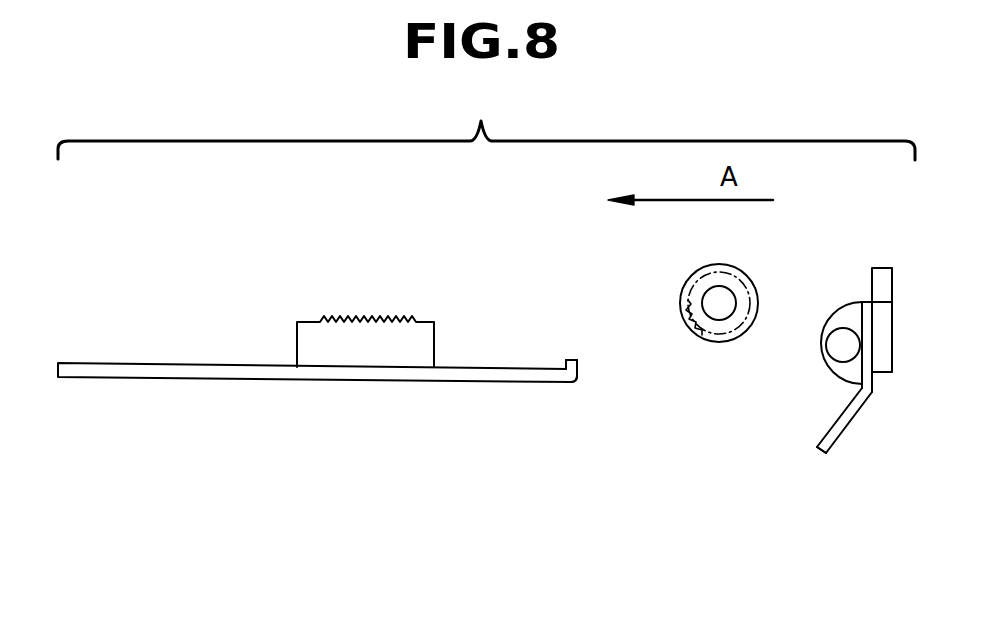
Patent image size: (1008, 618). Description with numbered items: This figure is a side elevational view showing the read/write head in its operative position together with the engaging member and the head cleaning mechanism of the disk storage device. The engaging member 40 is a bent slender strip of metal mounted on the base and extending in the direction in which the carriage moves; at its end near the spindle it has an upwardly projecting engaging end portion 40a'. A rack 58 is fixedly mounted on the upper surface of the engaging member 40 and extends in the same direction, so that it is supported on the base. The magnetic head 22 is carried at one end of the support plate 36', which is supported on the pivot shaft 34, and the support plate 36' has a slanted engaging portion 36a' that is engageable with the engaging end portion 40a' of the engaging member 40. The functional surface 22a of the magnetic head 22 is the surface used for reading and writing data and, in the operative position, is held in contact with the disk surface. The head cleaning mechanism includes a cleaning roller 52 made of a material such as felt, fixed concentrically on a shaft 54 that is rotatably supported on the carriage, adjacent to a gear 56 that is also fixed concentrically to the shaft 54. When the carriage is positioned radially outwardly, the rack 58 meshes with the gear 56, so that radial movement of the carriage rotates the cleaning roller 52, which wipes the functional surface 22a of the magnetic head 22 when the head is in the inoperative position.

The engaging member 40 is at (210, 363).
The engaging end portion 40a' is at (560, 346).
The rack 58 is at (369, 317).
The cleaning roller 52 is at (721, 342).
The shaft 54 is at (728, 293).
The gear 56 is at (697, 326).
The magnetic head 22 is at (887, 315).
The functional surface 22a is at (880, 268).
The pivot shaft 34 is at (840, 350).
The support plate 36' is at (862, 420).
The engaging portion 36a' is at (849, 455).